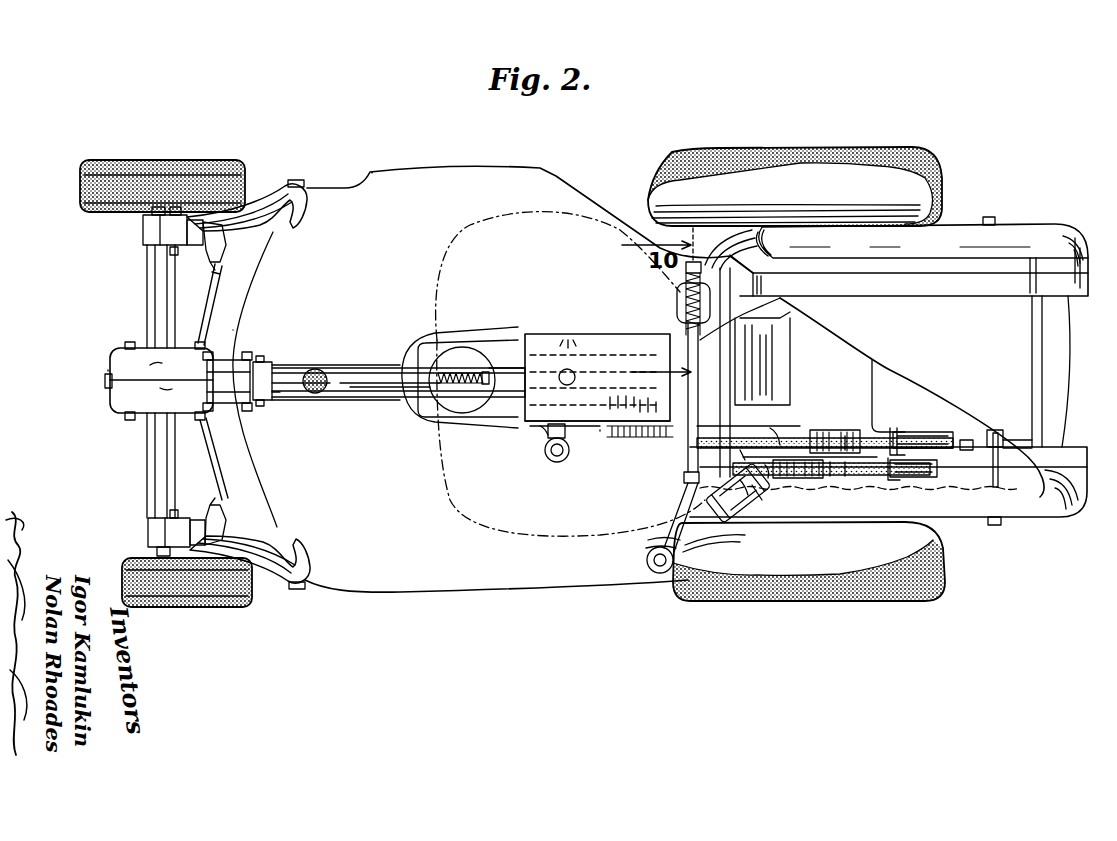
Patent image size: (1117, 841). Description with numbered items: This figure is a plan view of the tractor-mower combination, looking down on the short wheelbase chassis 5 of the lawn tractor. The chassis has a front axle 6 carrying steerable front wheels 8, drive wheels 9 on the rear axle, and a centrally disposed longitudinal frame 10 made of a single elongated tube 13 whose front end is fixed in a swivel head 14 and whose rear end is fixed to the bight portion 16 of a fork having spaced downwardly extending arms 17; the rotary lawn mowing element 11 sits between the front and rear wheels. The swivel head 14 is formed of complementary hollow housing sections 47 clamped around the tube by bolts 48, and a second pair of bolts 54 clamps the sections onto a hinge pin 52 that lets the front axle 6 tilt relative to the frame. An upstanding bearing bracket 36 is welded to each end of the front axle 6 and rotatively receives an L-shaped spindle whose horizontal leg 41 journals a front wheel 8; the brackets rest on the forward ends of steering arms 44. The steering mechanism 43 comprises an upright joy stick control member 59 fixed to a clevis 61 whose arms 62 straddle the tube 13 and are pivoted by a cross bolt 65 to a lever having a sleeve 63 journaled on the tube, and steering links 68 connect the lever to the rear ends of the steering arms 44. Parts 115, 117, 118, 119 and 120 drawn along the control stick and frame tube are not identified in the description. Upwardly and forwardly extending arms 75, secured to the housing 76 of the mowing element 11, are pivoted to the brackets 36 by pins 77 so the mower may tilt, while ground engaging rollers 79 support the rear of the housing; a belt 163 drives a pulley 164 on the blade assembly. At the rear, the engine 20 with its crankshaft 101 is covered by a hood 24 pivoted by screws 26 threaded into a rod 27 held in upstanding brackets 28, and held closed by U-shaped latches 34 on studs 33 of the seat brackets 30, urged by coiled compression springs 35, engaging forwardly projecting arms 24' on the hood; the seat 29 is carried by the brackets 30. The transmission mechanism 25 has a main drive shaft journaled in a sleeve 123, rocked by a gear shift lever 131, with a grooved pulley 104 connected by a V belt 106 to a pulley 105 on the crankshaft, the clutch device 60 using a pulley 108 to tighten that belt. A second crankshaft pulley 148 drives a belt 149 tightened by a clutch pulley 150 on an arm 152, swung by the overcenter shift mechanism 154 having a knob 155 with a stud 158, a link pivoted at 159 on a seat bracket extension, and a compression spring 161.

The short wheelbase chassis 5 is at (400, 138).
The steerable front wheels 8 is at (170, 163).
The drive wheels 9 is at (880, 158).
The rotary lawn mowing element 11 is at (460, 170).
The housing of the mowing element 76 is at (360, 588).
The front axle 6 is at (150, 458).
The bearing bracket 36 is at (143, 233).
The horizontally disposed leg of spindle 41 is at (152, 211).
The pivot pins 77 is at (170, 252).
The steering arms 44 is at (210, 250).
The steering links 68 is at (217, 275).
The steering mechanism 43 is at (222, 318).
The arms 75 is at (300, 215).
The upstanding brackets 28 is at (296, 180).
The hollow housing sections 47 is at (118, 362).
The swivel head 14 is at (100, 371).
The hinge pin 52 is at (105, 381).
The bolts 48 is at (178, 400).
The second pair of bolts 54 is at (130, 420).
The sleeve 63 is at (232, 405).
The clevis arms 62 is at (246, 352).
The clevis 61 is at (262, 356).
The cross bolt 65 is at (275, 405).
The ball joint 118 is at (300, 393).
The longitudinal frame 10 is at (350, 366).
The control member 59 is at (292, 366).
The tube 117 is at (376, 369).
The elongated tube 13 is at (378, 400).
The pulley 164 is at (446, 423).
The ring 119 is at (450, 350).
The spring 120 is at (470, 370).
The collar 115 is at (488, 372).
The belt 163 is at (518, 366).
The seat brackets 30 is at (612, 336).
The pivot of upper link 159 is at (548, 425).
The studs 33 is at (678, 300).
The stud 158 is at (548, 436).
The knob 155 is at (553, 460).
The compression spring 161 is at (645, 438).
The shift mechanism 154 is at (620, 468).
The U-shaped latch 34 is at (686, 268).
The coiled compression springs 35 is at (686, 300).
The seat 29 is at (522, 213).
The gear shift lever 131 is at (680, 515).
The ground engaging rollers 79 is at (757, 296).
The forwardly projecting arms 24' is at (708, 381).
The fork arms 17 is at (770, 322).
The bight portion 16 is at (760, 350).
The sleeve 123 is at (766, 368).
The hood 24 is at (889, 370).
The screws 26 is at (1000, 213).
The rod 27 is at (1000, 462).
The internal combustion engine 20 is at (880, 385).
The clutch device 60 is at (805, 420).
The transmission mechanism 25 is at (832, 428).
The engine crankshaft 101 is at (918, 432).
The pulley 105 is at (900, 432).
The V belt 106 is at (880, 476).
The clutch pulley 150 is at (796, 478).
The second V groove pulley 148 is at (912, 477).
The V belt 149 is at (848, 478).
The grooved pulley 108 is at (832, 478).
The arm 152 is at (768, 480).
The grooved pulley 104 is at (748, 500).